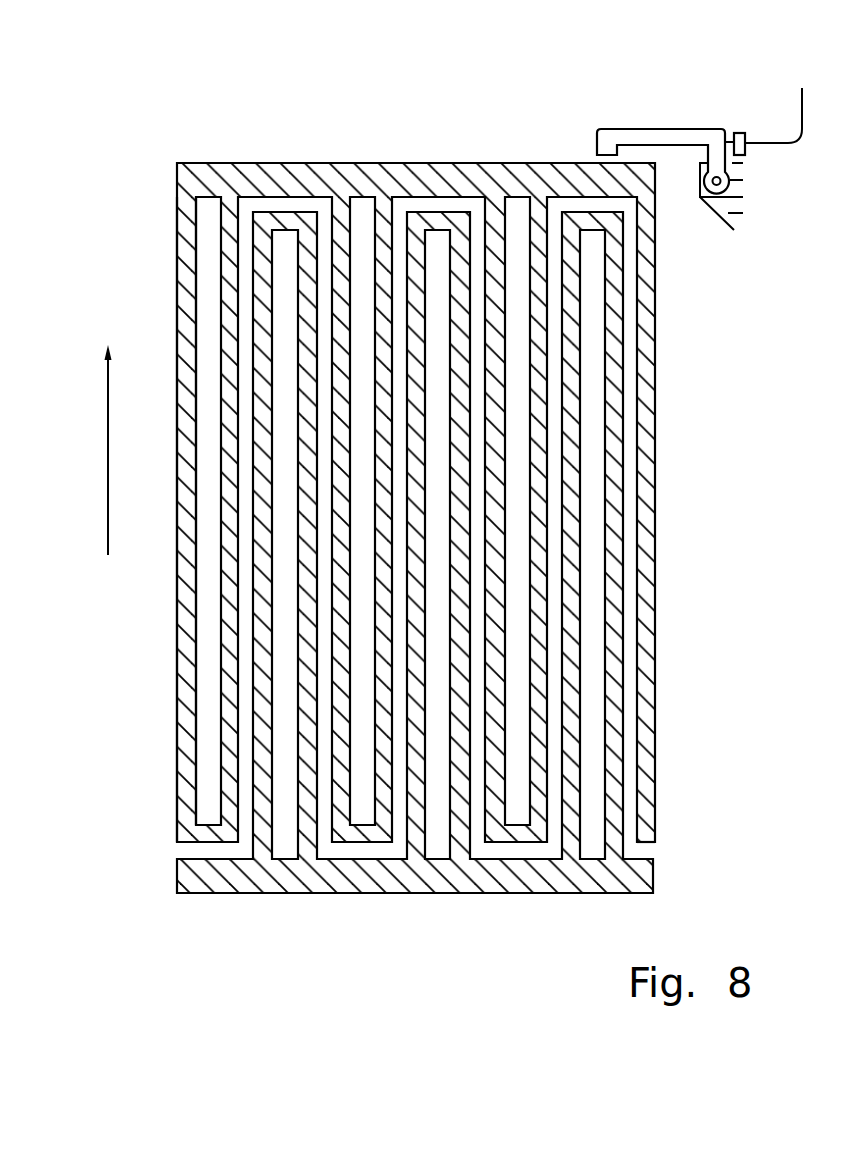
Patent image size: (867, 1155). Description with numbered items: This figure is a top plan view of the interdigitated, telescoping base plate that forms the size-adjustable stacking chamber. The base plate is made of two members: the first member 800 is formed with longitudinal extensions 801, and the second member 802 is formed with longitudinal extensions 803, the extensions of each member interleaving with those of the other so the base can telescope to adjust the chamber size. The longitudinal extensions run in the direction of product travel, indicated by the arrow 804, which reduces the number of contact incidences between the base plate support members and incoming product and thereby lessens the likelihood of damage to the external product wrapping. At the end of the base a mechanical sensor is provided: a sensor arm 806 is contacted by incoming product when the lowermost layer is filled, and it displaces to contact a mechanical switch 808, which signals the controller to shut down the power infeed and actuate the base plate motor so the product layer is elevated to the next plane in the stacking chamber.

The first member 800 is at (177, 869).
The longitudinal extensions 801 is at (634, 843).
The second member 802 is at (177, 177).
The longitudinal extensions 803 is at (177, 221).
The arrow 804 is at (108, 468).
The sensor arm 806 is at (643, 133).
The mechanical switch 808 is at (742, 131).